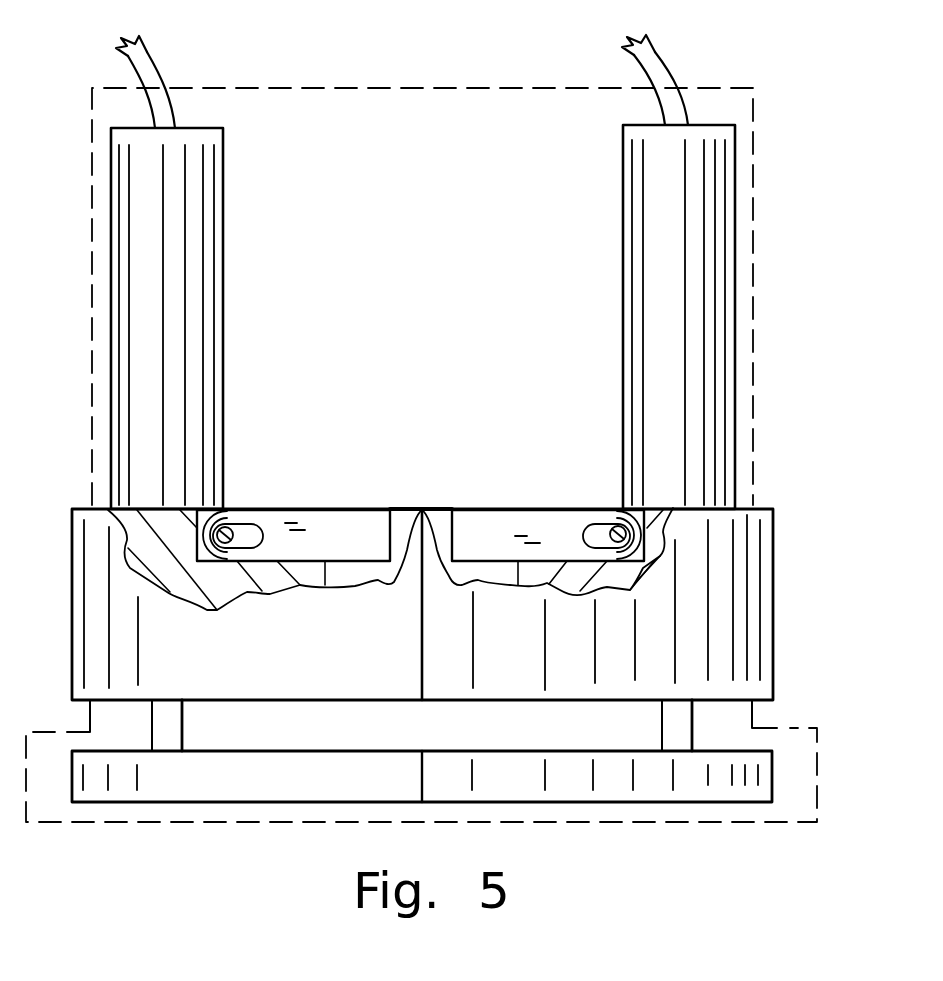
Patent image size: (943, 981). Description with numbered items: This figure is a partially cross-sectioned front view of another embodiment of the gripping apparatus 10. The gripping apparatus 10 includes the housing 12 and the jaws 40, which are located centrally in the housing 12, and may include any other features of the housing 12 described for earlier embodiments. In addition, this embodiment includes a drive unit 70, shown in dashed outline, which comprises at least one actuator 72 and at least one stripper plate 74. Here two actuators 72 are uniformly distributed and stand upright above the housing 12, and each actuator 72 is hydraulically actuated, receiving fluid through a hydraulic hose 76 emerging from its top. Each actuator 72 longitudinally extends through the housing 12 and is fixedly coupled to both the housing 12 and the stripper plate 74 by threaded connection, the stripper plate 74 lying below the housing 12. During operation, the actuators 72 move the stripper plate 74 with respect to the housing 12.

The gripping apparatus 10 is at (772, 50).
The housing 12 is at (773, 508).
The jaws 40 is at (490, 523).
The drive unit 70 is at (752, 127).
The actuator 72 is at (223, 265).
The stripper plate 74 is at (772, 768).
The hydraulic hose 76 is at (155, 70).